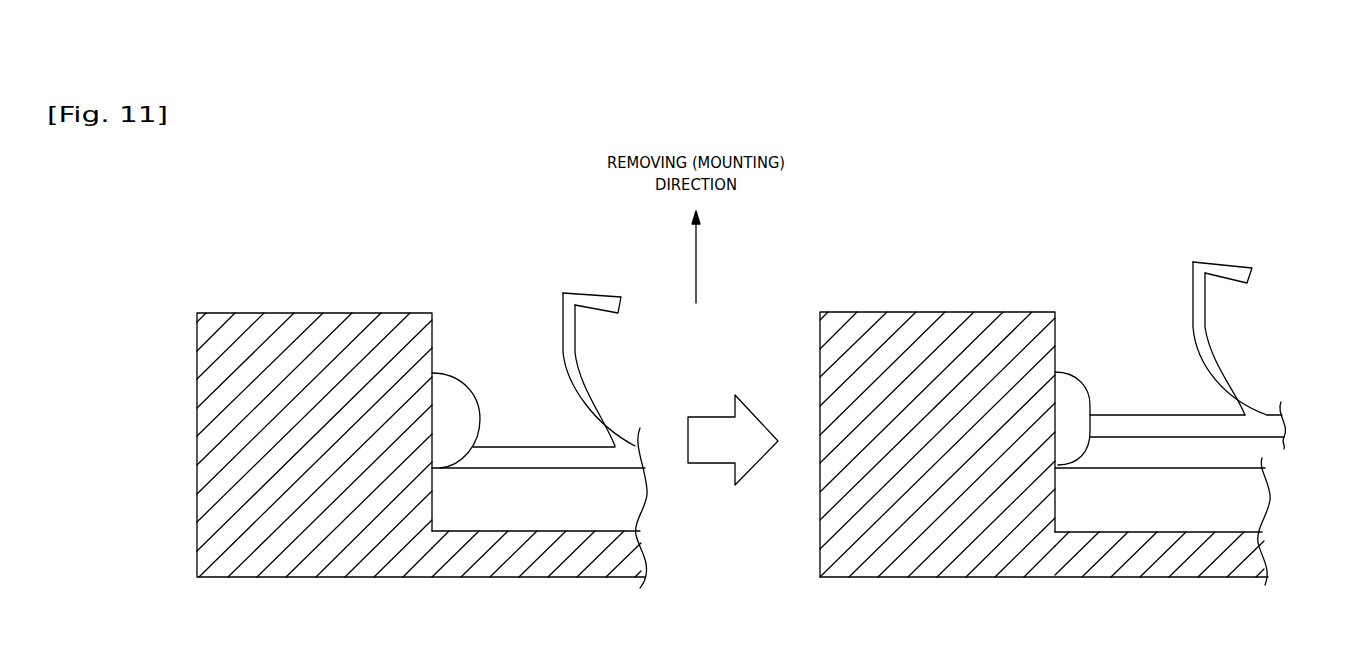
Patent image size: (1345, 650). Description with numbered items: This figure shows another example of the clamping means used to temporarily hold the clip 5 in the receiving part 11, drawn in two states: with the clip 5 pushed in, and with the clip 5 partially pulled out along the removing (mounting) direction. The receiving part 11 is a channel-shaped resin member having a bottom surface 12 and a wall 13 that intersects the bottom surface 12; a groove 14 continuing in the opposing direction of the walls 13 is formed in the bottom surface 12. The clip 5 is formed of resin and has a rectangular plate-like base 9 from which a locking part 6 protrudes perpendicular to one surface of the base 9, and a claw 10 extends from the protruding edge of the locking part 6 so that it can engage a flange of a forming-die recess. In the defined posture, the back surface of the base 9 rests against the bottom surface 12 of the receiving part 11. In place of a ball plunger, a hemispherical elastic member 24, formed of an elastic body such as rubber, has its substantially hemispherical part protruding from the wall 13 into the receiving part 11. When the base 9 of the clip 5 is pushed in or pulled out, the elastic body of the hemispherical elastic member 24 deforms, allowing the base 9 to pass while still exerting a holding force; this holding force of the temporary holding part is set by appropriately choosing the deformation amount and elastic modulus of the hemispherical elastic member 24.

The clip 5 is at (879, 320).
The locking part 6 is at (565, 292).
The base 9 is at (527, 445).
The claw 10 is at (620, 300).
The receiving part 11 is at (784, 350).
The bottom surface 12 is at (512, 466).
The wall 13 is at (340, 311).
The groove 14 is at (590, 530).
The hemispherical elastic member 24 is at (456, 372).